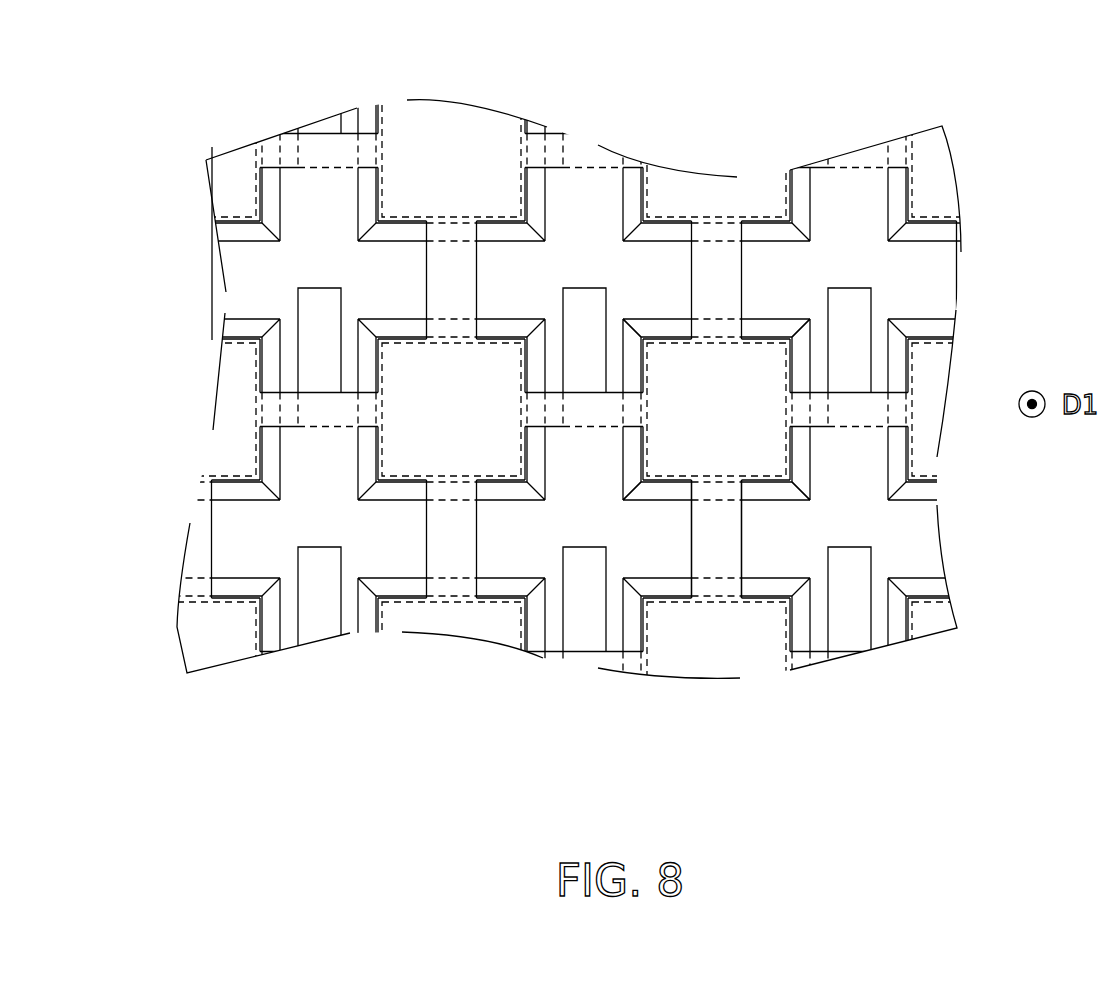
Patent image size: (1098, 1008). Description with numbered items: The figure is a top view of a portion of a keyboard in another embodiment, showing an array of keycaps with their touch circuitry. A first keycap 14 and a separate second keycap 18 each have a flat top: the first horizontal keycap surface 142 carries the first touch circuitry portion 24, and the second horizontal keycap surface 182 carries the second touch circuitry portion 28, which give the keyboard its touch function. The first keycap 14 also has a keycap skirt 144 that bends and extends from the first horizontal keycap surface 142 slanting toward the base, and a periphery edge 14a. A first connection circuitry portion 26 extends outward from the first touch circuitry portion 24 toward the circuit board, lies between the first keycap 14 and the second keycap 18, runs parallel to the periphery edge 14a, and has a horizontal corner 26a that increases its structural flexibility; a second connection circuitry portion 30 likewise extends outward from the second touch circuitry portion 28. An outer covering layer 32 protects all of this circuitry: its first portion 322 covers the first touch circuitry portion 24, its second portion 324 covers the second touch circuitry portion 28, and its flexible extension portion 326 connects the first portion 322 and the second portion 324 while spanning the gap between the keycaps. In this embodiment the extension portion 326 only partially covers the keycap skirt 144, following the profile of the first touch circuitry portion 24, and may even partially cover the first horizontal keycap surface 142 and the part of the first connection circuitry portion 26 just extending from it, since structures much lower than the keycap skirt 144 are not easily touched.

The first keycap 14 is at (764, 507).
The periphery edge of the first keycap 14a is at (616, 334).
The first horizontal keycap surface 142 is at (760, 337).
The keycap skirt 144 is at (672, 327).
The second keycap 18 is at (405, 506).
The second horizontal keycap surface 182 is at (396, 337).
The first touch circuitry portion 24 is at (668, 484).
The first connection circuitry portion 26 is at (574, 328).
The horizontal corner 26a is at (570, 418).
The second touch circuitry portion 28 is at (378, 458).
The second connection circuitry portion 30 is at (318, 300).
The outer covering layer 32 is at (933, 283).
The first portion 322 is at (653, 484).
The second portion 324 is at (508, 481).
The extension portion 326 is at (597, 428).